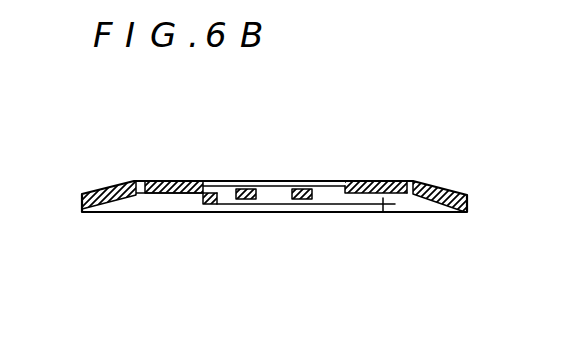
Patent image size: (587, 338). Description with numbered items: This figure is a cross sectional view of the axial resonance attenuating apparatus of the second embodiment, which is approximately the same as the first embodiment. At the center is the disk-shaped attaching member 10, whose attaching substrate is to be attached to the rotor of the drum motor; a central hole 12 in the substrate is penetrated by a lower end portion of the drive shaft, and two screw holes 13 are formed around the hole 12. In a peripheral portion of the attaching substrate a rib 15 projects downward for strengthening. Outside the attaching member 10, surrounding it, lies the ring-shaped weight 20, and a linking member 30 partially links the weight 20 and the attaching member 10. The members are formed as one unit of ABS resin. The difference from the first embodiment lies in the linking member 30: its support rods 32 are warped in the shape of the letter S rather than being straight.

The ring-shaped weight 20 is at (457, 181).
The support rods 32 is at (392, 180).
The rib 15 is at (197, 181).
The screw holes 13 is at (228, 182).
The hole 12 is at (290, 213).
The attaching member 10 is at (207, 214).
The linking member 30 is at (383, 214).